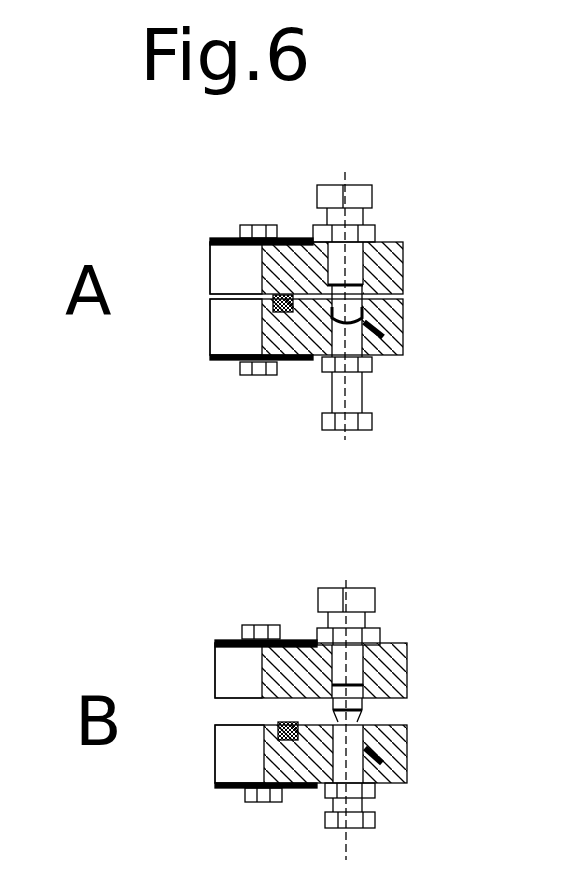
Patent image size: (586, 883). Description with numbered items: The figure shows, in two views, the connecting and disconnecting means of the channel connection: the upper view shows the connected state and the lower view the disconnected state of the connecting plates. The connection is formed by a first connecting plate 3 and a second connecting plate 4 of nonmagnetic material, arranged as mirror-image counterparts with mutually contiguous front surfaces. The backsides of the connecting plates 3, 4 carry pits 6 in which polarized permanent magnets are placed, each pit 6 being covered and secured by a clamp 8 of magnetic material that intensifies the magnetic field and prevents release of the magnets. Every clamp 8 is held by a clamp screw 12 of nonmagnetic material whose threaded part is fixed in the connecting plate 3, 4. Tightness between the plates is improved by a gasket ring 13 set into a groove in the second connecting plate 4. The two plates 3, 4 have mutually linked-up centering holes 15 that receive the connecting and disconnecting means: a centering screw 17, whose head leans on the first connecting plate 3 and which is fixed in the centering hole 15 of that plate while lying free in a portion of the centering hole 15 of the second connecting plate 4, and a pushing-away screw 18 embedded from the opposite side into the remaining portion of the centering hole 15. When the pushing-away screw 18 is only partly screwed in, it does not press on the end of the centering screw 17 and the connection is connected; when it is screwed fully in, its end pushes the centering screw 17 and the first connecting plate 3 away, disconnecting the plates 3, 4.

The first connecting plate 3 is at (400, 261).
The second connecting plate 4 is at (397, 308).
The pit 6 is at (226, 260).
The clamp 8 is at (227, 241).
The clamp screw 12 is at (258, 223).
The gasket ring 13 is at (288, 722).
The centering hole 15 is at (392, 353).
The centering screw 17 is at (373, 198).
The pushing-away screw 18 is at (353, 385).